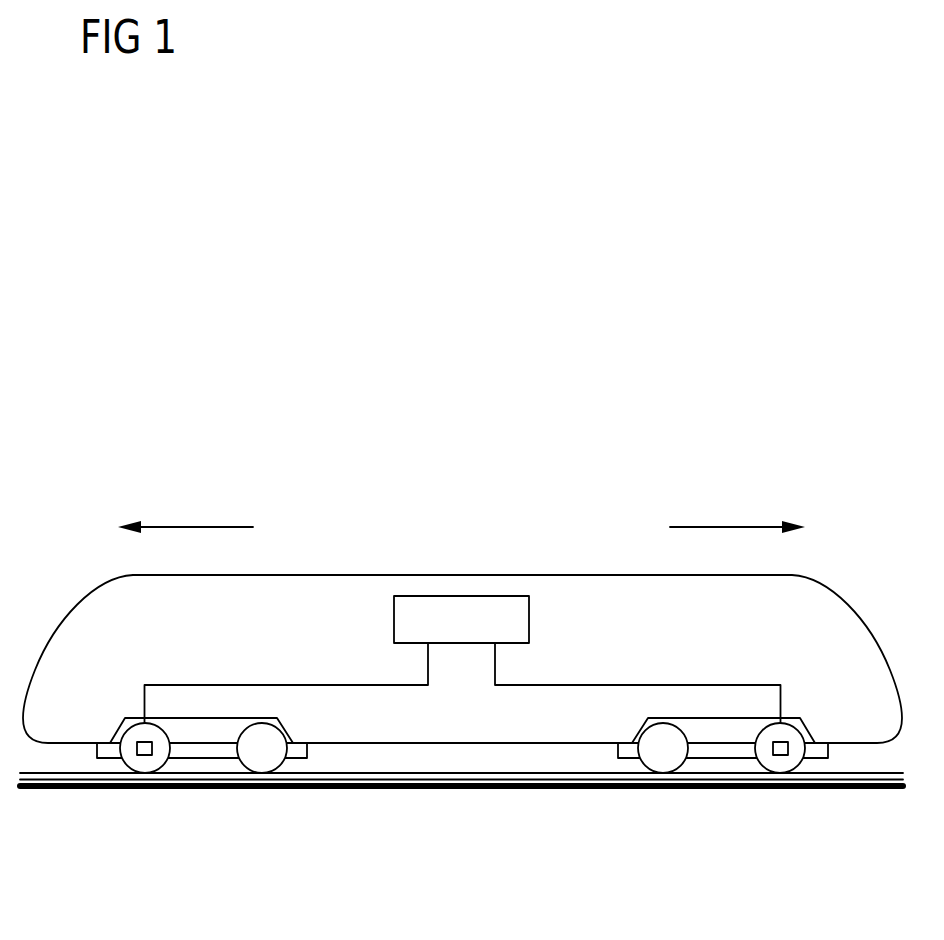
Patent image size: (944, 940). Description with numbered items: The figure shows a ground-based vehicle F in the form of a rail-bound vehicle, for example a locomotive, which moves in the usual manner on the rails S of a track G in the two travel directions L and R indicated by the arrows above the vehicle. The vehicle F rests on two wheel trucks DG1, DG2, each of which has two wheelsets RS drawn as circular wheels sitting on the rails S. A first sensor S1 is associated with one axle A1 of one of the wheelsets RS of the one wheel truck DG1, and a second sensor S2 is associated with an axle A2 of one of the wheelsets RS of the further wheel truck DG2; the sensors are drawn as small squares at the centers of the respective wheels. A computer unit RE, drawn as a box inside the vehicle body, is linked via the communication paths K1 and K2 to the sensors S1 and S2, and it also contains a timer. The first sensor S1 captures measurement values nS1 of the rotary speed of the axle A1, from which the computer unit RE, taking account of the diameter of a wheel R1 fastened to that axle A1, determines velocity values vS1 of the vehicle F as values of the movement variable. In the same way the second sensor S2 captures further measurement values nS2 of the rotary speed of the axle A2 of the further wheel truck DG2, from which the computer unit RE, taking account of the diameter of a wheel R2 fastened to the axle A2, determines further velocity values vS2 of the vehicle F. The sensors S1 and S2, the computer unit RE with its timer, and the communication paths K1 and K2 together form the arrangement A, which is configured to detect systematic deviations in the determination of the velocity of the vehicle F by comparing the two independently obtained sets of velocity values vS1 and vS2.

The arrangement A is at (504, 566).
The ground-based vehicle F is at (603, 575).
The travel direction L is at (187, 527).
The travel direction R is at (728, 527).
The computer unit RE is at (410, 596).
The velocity values vS1 is at (461, 619).
The further velocity values vS2 is at (461, 619).
The communication path K1 is at (253, 685).
The communication path K2 is at (665, 685).
The wheel truck DG1 is at (215, 750).
The further wheel truck DG2 is at (710, 750).
The wheelset RS is at (284, 762).
The wheel R1 is at (123, 760).
The wheel R2 is at (802, 760).
The axle A1 is at (146, 756).
The first sensor S1 is at (144, 748).
The measurement values of the rotary speed nS1 is at (144, 748).
The axle A2 is at (774, 756).
The second sensor S2 is at (780, 748).
The further measurement values of the rotary speed nS2 is at (780, 748).
The rails S is at (427, 778).
The track G is at (461, 779).